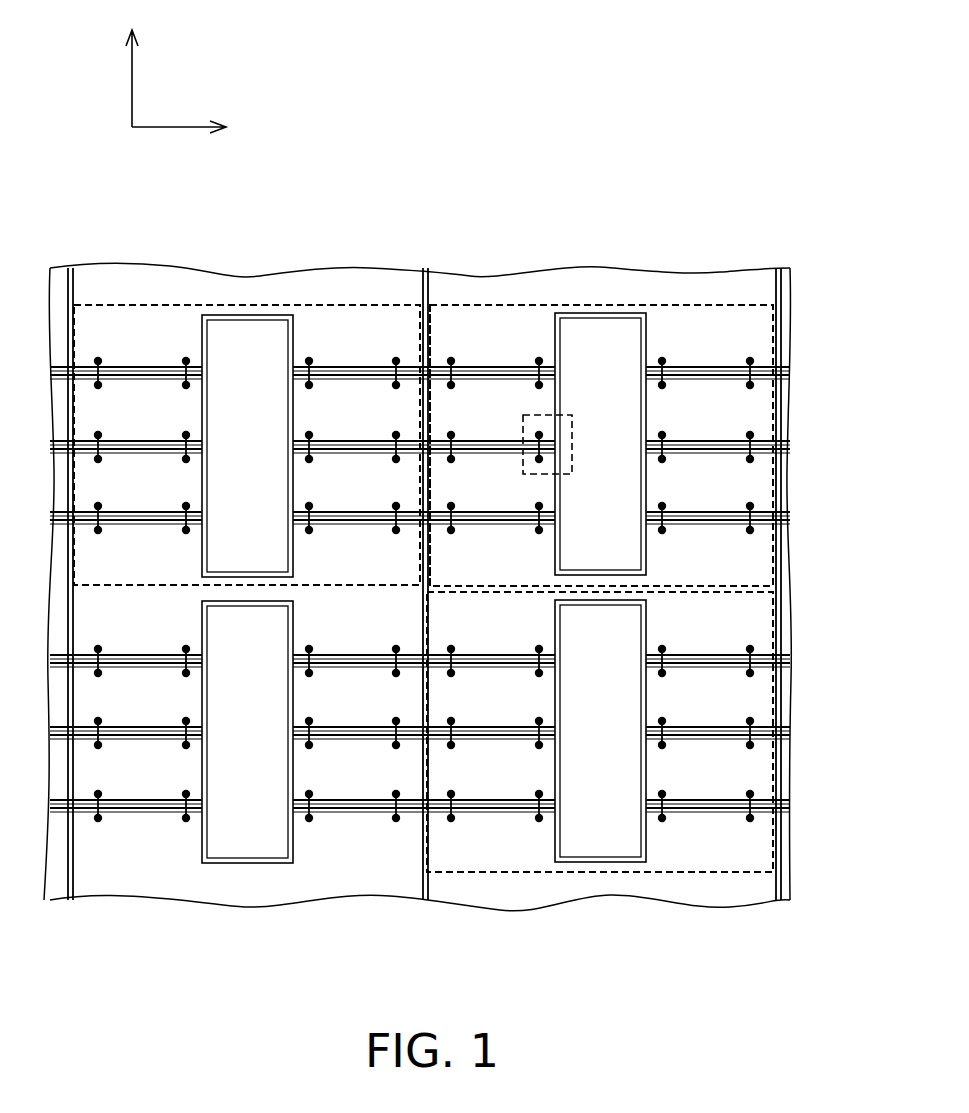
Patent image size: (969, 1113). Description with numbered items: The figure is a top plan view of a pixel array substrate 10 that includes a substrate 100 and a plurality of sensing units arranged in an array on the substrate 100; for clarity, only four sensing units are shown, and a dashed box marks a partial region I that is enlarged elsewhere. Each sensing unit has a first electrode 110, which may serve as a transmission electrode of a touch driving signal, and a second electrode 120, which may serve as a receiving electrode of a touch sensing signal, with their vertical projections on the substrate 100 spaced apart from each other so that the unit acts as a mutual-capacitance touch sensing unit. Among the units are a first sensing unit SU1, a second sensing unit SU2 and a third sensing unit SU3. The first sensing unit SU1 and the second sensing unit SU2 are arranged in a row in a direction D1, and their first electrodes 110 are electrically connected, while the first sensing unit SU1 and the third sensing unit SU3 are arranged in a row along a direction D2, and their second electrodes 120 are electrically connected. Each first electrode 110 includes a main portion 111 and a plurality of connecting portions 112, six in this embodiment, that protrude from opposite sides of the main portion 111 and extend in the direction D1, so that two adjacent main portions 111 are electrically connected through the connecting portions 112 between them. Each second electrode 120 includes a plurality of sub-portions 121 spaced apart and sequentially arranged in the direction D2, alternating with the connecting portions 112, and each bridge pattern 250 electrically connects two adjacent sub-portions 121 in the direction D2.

The pixel array substrate 10 is at (774, 1019).
The substrate 100 is at (777, 270).
The first electrode 110 is at (563, 204).
The main portion 111 is at (598, 340).
The connecting portions 112 is at (510, 400).
The second electrode 120 is at (533, 204).
The sub-portions 121 is at (508, 400).
The bridge pattern 250 is at (312, 443).
The first sensing unit SU1 is at (710, 303).
The second sensing unit SU2 is at (250, 303).
The third sensing unit SU3 is at (706, 874).
The partial region I is at (573, 440).
The direction D1 is at (194, 128).
The direction D2 is at (133, 65).